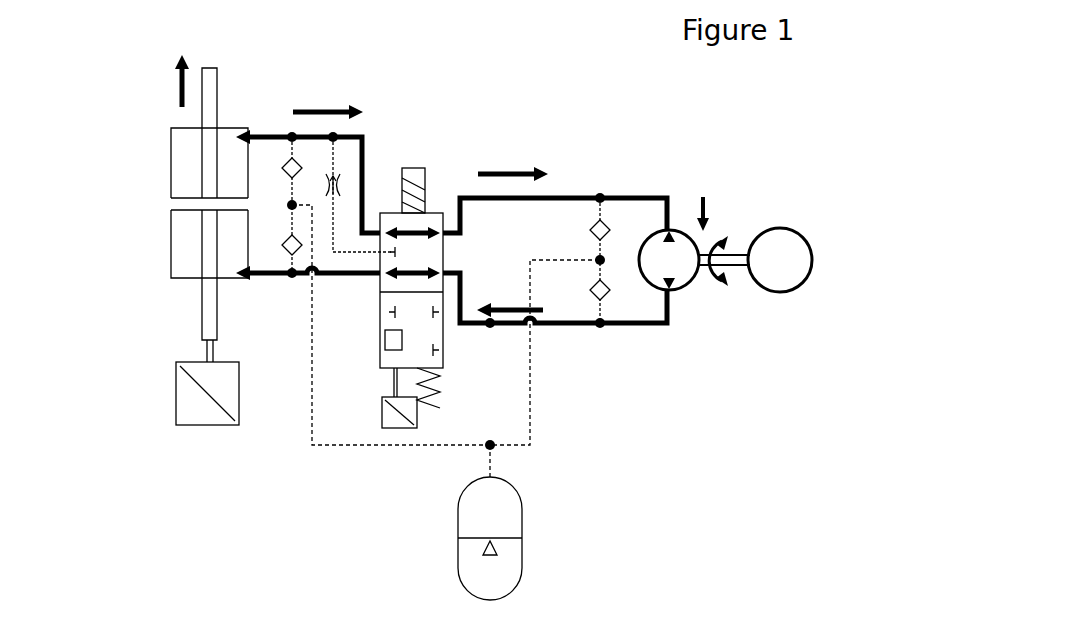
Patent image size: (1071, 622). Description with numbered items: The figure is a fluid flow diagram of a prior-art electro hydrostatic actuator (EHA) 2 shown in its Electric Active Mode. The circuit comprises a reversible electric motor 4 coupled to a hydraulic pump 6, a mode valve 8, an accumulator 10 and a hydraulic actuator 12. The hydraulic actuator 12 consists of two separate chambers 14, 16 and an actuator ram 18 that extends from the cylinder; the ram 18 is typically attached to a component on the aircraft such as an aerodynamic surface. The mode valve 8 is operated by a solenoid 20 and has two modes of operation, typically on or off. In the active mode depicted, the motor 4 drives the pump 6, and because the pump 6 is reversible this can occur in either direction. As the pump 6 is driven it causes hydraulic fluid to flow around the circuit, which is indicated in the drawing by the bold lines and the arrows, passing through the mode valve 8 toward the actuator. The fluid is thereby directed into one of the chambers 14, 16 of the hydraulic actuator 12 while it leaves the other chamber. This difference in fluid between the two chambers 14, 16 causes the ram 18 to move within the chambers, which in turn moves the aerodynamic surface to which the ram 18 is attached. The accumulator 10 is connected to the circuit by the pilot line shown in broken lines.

The electro hydrostatic actuator 2 is at (572, 168).
The reversible electric motor 4 is at (777, 240).
The hydraulic pump 6 is at (672, 267).
The mode valve 8 is at (451, 244).
The accumulator 10 is at (500, 512).
The hydraulic actuator 12 is at (202, 214).
The chamber 14 is at (195, 163).
The chamber 16 is at (193, 251).
The actuator ram 18 is at (206, 115).
The solenoid 20 is at (408, 173).